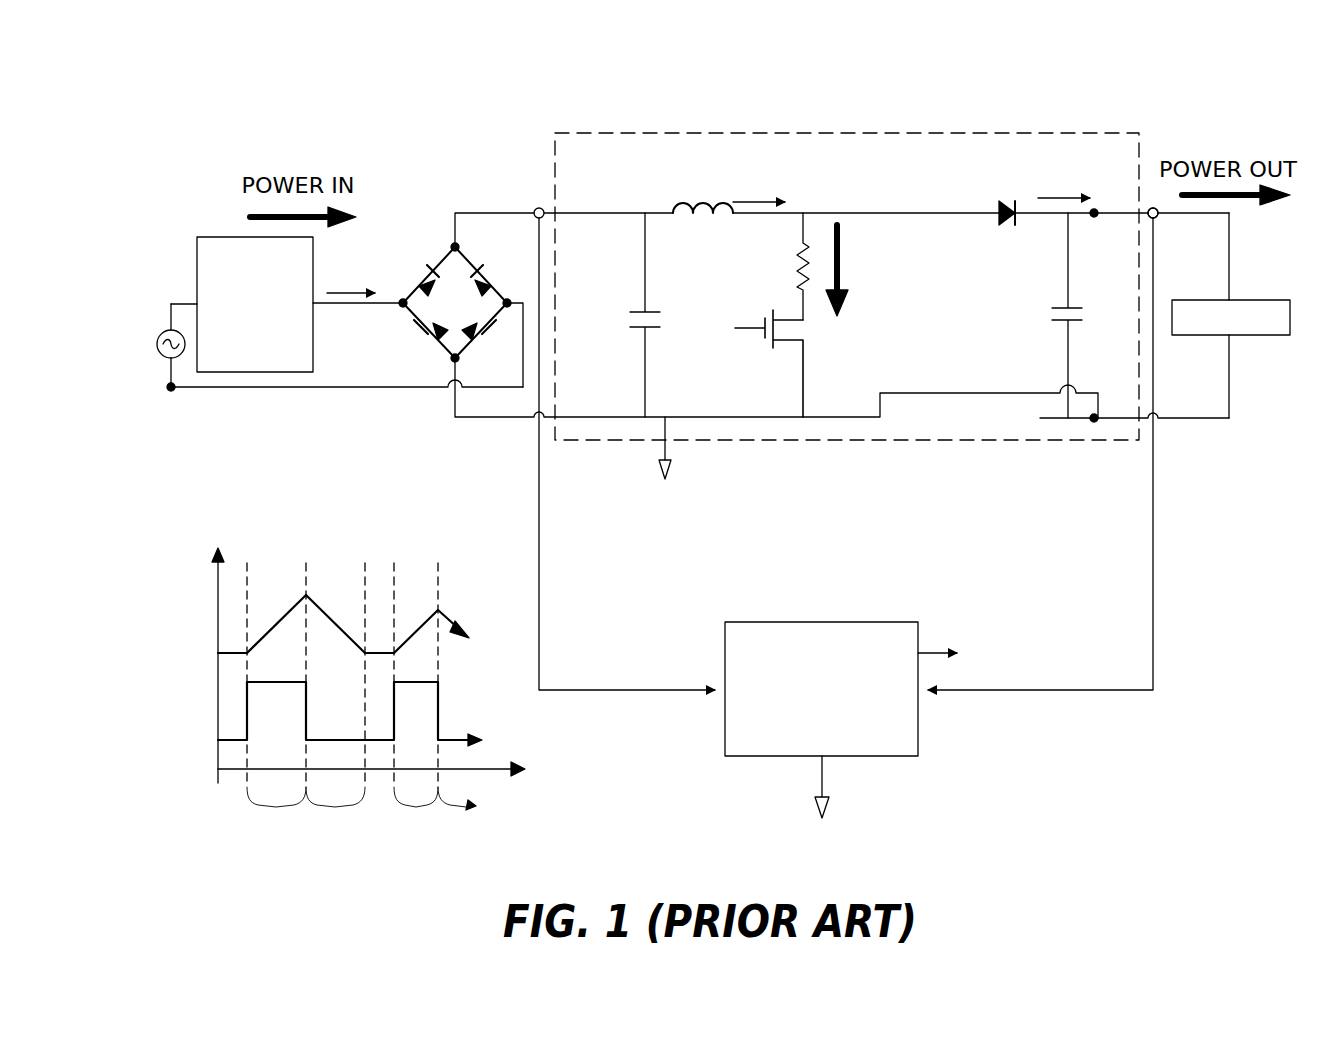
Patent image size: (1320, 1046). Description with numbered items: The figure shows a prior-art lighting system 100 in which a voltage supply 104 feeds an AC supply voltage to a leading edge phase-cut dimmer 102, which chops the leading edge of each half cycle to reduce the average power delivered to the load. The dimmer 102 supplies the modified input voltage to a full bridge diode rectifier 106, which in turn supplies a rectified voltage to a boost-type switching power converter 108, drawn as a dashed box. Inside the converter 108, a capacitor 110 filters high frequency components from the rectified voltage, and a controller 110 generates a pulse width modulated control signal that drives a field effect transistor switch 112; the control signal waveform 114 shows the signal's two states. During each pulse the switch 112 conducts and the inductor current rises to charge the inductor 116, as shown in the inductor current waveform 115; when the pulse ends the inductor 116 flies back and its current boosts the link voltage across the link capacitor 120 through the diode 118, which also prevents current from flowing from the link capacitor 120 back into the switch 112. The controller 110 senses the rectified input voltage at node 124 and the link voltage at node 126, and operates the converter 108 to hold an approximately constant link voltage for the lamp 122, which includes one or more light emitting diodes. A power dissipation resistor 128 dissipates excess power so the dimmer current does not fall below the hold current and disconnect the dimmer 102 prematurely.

The lighting system 100 is at (1214, 150).
The phase-cut dimmer 102 is at (347, 312).
The voltage supply 104 is at (170, 352).
The full bridge diode rectifier 106 is at (748, 315).
The switching power converter 108 is at (1030, 133).
The controller 110 is at (660, 327).
The field effect transistor switch 112 is at (766, 319).
The control signal waveform 114 is at (453, 701).
The inductor current waveform 115 is at (453, 603).
The inductor 116 is at (690, 203).
The diode 118 is at (1001, 202).
The link capacitor 120 is at (1058, 308).
The lamp 122 is at (1254, 300).
The node 124 is at (535, 208).
The node 126 is at (1149, 208).
The power dissipation resistor 128 is at (798, 267).